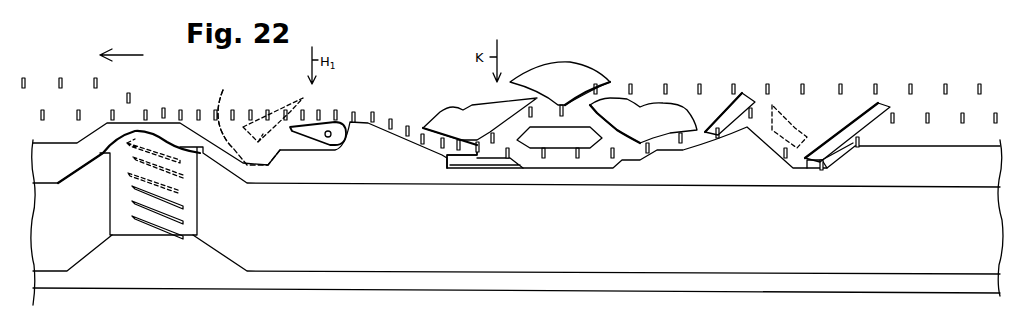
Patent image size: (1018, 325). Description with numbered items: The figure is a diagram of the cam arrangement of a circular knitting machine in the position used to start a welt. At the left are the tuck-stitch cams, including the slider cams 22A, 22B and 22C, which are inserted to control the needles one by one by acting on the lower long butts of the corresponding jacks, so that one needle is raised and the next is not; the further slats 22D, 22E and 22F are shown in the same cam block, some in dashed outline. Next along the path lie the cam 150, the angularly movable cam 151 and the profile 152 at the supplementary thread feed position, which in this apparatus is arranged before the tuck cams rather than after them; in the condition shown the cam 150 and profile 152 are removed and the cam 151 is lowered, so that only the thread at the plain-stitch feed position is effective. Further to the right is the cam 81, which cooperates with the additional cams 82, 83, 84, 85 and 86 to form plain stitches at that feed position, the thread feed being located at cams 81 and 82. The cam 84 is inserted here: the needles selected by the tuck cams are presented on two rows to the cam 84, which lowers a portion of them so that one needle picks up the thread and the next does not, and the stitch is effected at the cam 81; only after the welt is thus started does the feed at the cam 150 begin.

The slider cam 22A is at (170, 238).
The slider cam 22B is at (132, 202).
The slider cam 22C is at (183, 208).
The louver slat (hidden) 22D is at (128, 174).
The louver slat (hidden) 22E is at (117, 148).
The louver slat (hidden) 22F is at (157, 163).
The cam 81 is at (440, 112).
The cam 82 is at (594, 73).
The cam 83 is at (641, 99).
The cam 84 is at (743, 96).
The cam 85 is at (798, 121).
The cam 86 is at (887, 105).
The cam 150 is at (281, 96).
The angularly movable cam 151 is at (336, 128).
The profile 152 is at (233, 97).